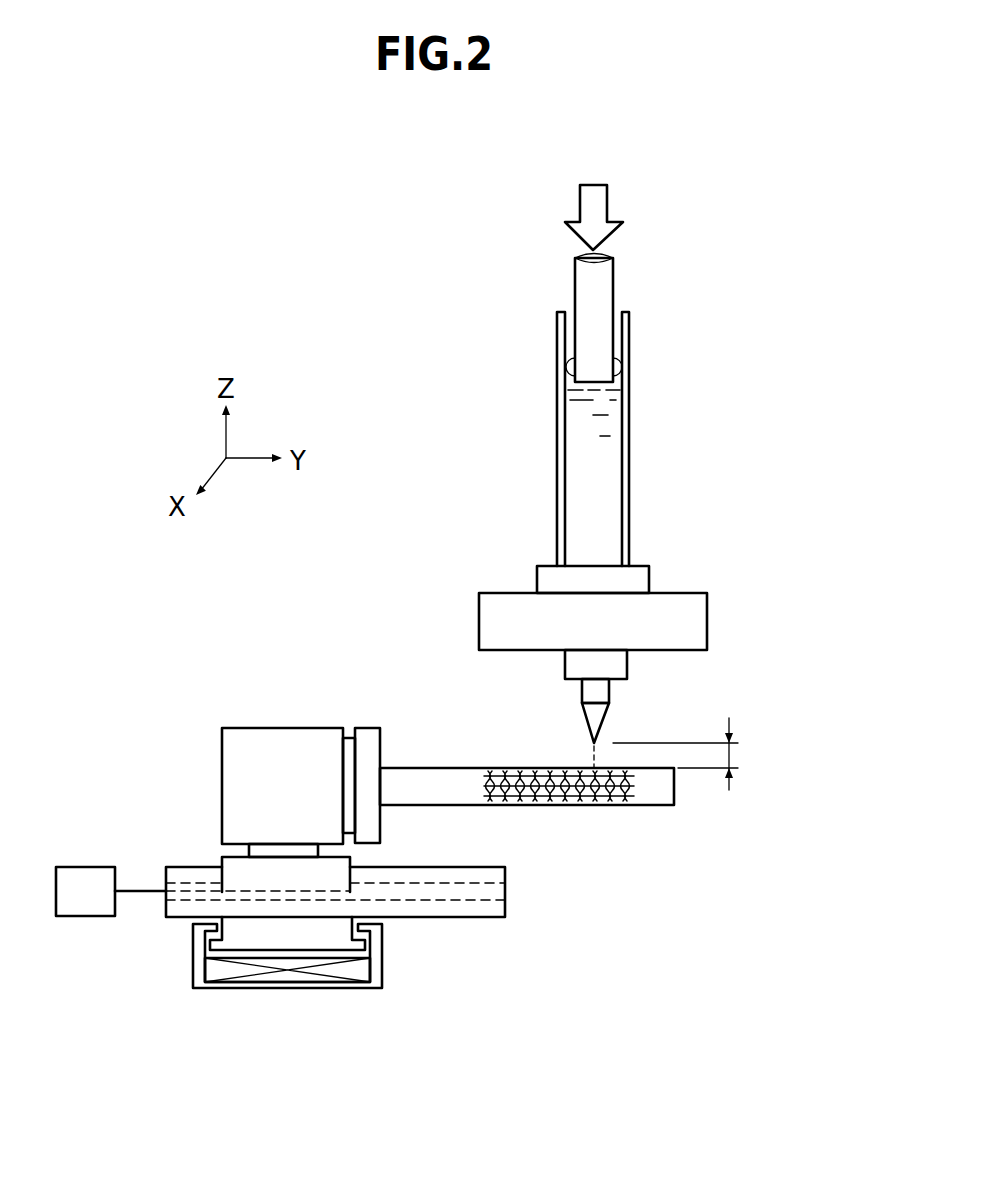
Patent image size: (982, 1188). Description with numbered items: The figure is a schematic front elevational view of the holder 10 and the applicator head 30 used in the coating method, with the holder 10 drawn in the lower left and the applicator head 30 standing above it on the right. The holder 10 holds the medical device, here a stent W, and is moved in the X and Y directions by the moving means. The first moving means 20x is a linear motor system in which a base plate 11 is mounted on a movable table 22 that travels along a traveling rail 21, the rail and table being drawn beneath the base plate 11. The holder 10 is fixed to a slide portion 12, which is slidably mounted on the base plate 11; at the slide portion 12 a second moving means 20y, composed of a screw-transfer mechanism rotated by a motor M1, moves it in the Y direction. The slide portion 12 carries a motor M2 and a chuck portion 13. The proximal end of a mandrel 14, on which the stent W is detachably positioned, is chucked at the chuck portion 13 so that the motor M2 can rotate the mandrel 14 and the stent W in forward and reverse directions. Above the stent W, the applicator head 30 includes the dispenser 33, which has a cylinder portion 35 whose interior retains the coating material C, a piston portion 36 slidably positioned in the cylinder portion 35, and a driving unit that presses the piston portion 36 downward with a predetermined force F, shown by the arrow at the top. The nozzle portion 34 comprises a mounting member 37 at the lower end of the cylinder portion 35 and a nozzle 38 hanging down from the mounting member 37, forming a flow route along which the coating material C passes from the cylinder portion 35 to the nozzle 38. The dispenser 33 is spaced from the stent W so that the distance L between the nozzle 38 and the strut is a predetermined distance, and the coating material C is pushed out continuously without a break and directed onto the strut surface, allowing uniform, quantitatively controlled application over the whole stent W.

The holder 10 is at (213, 712).
The base plate 11 is at (470, 908).
The slide portion 12 is at (345, 862).
The chuck portion 13 is at (366, 732).
The mandrel 14 is at (527, 788).
The first moving means 20x is at (272, 976).
The second moving means 20y is at (158, 853).
The traveling rail 21 is at (375, 972).
The movable table 22 is at (322, 938).
The applicator head 30 is at (750, 280).
The dispenser 33 is at (522, 305).
The nozzle portion 34 is at (488, 528).
The cylinder portion 35 is at (630, 425).
The piston portion 36 is at (600, 289).
The mounting member 37 is at (700, 625).
The nozzle 38 is at (598, 695).
The predetermined force F is at (597, 206).
The coating material C is at (608, 484).
The stent W is at (540, 806).
The distance L is at (690, 754).
The motor M1 is at (111, 891).
The motor M2 is at (282, 786).